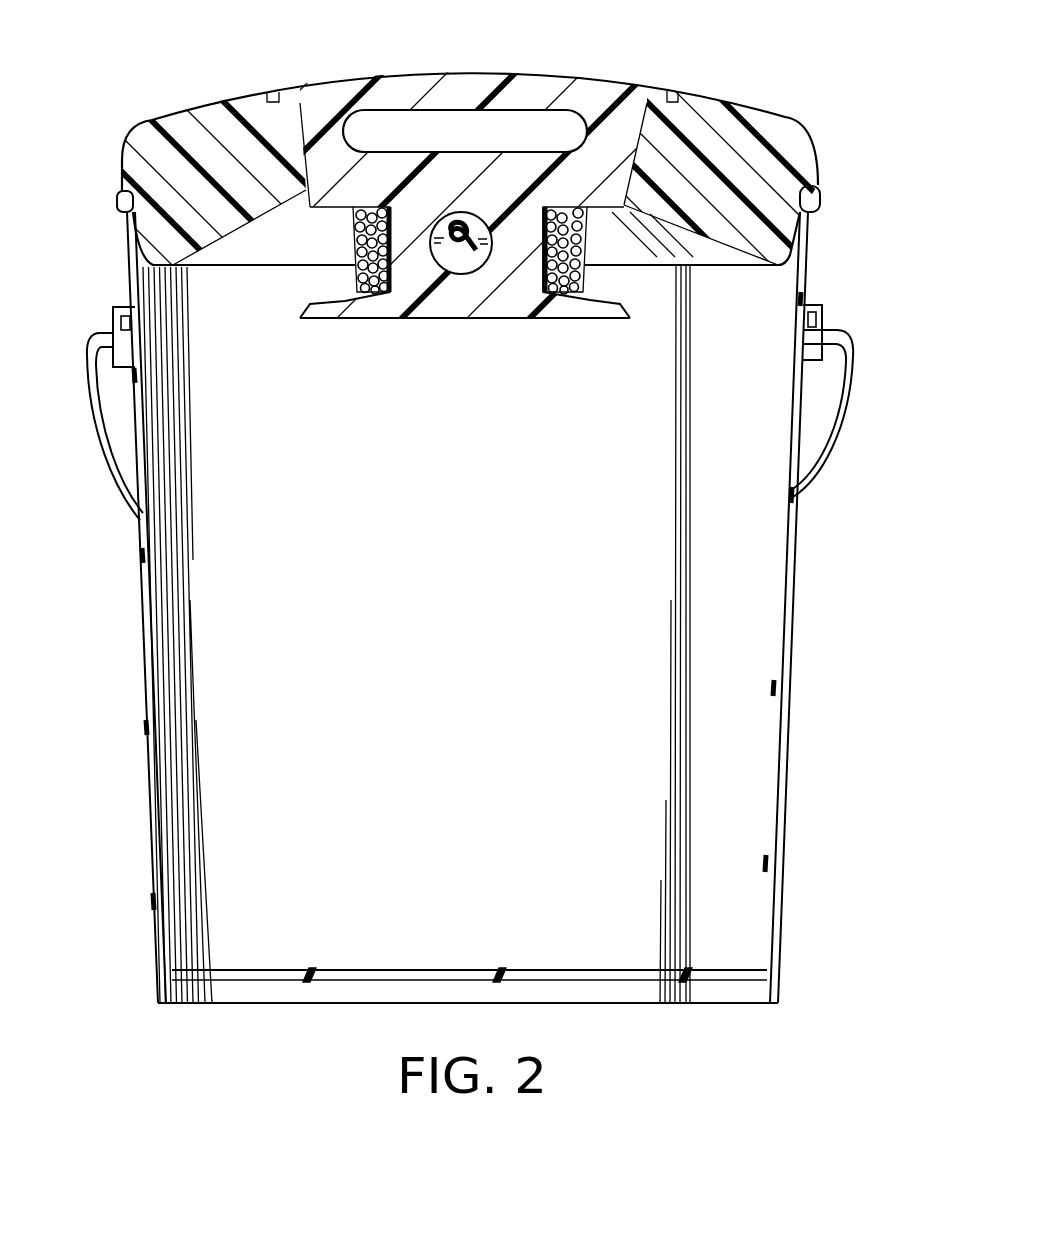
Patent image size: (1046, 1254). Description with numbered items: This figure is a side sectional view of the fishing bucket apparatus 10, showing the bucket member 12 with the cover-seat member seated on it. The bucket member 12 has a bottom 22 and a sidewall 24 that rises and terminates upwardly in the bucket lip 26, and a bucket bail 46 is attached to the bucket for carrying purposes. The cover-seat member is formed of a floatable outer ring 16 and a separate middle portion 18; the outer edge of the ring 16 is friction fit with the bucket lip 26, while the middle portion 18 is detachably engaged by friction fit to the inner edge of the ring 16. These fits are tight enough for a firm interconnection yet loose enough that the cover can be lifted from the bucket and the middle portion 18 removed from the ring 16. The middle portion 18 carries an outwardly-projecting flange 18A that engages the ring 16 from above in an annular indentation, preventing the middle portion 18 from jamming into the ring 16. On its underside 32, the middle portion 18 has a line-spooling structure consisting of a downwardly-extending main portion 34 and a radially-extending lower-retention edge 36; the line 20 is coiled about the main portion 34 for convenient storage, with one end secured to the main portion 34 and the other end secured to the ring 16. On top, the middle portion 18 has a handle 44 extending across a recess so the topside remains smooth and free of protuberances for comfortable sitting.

The fishing bucket apparatus 10 is at (130, 744).
The bucket member 12 is at (212, 617).
The floatable outer ring 16 is at (740, 133).
The middle portion 18 is at (320, 118).
The outwardly-projecting flange 18A is at (273, 100).
The line 20 is at (357, 267).
The bottom 22 is at (707, 980).
The sidewall 24 is at (778, 716).
The bucket lip 26 is at (817, 192).
The underside 32 is at (417, 320).
The main portion 34 is at (503, 267).
The lower-retention edge 36 is at (333, 320).
The handle 44 is at (437, 95).
The bucket bail 46 is at (850, 393).